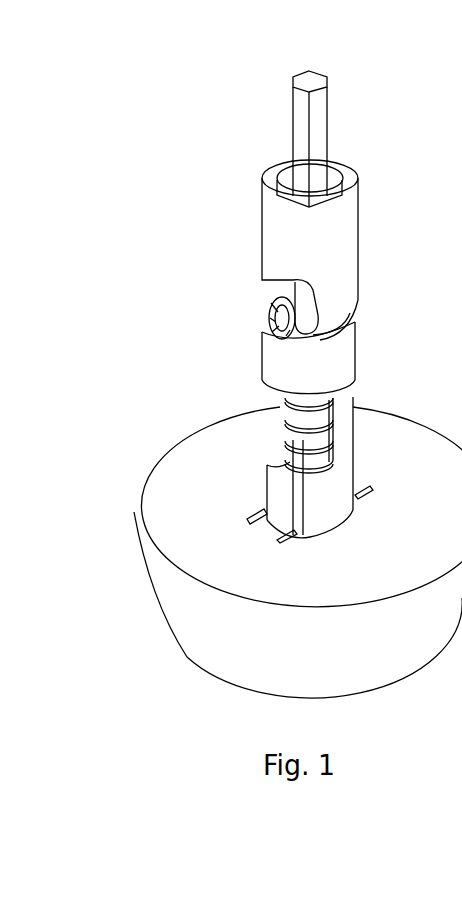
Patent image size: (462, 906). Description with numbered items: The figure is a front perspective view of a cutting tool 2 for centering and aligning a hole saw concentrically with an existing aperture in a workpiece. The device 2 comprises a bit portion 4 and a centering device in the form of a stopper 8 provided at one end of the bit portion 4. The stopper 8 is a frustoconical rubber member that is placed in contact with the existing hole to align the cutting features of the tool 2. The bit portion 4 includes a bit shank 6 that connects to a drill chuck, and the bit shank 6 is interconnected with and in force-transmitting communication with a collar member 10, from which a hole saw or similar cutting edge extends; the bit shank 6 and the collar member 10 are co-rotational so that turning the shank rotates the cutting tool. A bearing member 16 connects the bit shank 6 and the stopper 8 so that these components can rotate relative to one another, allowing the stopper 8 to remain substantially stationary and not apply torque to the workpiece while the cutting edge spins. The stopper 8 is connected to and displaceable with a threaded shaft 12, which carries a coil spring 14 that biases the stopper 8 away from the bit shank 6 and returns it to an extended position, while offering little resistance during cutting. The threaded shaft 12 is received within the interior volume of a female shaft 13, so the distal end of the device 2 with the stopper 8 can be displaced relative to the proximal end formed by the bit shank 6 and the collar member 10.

The cutting tool 2 is at (132, 329).
The bit portion 4 is at (215, 178).
The bit shank 6 is at (287, 113).
The stopper 8 is at (194, 621).
The collar member 10 is at (365, 238).
The threaded shaft 12 is at (287, 437).
The female shaft 13 is at (295, 296).
The coil spring 14 is at (278, 420).
The bearing member 16 is at (263, 308).